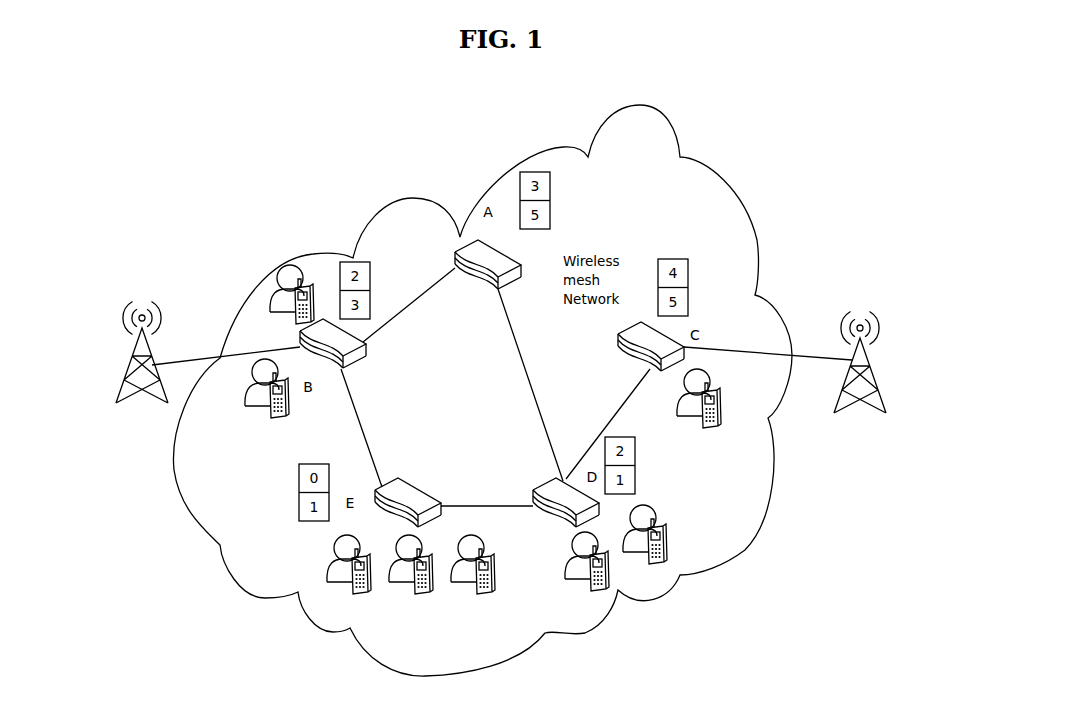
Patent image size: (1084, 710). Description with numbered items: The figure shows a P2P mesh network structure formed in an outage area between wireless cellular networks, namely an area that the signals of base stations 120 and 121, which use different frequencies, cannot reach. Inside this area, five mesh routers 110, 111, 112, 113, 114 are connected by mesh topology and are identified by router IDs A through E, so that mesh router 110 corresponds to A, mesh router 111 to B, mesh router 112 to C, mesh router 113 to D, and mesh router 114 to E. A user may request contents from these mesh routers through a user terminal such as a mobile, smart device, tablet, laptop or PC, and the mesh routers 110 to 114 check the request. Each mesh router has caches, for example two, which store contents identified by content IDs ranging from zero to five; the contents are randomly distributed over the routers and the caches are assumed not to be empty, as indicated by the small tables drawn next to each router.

The mesh router 110 is at (462, 248).
The mesh router 111 is at (366, 344).
The mesh router 112 is at (618, 343).
The mesh router 113 is at (552, 478).
The mesh router 114 is at (418, 486).
The base station 120 is at (128, 365).
The base station 121 is at (873, 375).